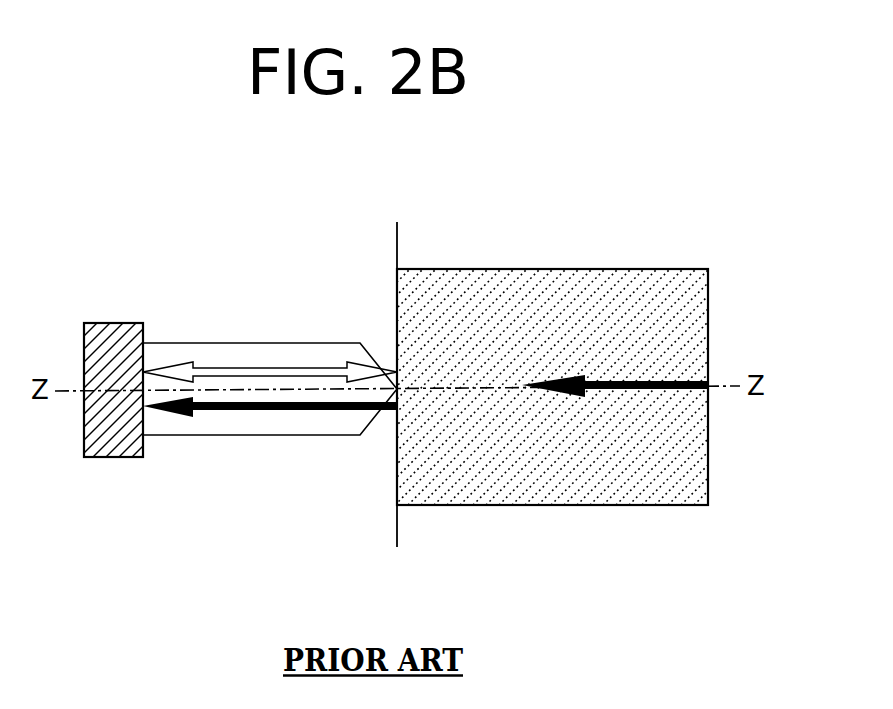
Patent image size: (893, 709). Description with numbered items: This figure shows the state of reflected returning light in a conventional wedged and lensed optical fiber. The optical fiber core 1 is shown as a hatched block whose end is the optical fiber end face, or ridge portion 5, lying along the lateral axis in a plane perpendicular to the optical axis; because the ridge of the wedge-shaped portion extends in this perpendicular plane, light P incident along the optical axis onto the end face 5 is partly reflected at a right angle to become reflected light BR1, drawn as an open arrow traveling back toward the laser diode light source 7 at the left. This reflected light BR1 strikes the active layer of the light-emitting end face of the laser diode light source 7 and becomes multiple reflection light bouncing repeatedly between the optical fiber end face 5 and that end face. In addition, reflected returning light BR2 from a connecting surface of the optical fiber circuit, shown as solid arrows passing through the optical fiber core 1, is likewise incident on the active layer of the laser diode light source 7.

The optical fiber core 1 is at (633, 285).
The ridge portion 5 is at (396, 308).
The laser diode light source 7 is at (116, 440).
The light P is at (194, 342).
The reflected light BR1 is at (253, 366).
The reflected returning light BR2 is at (262, 456).